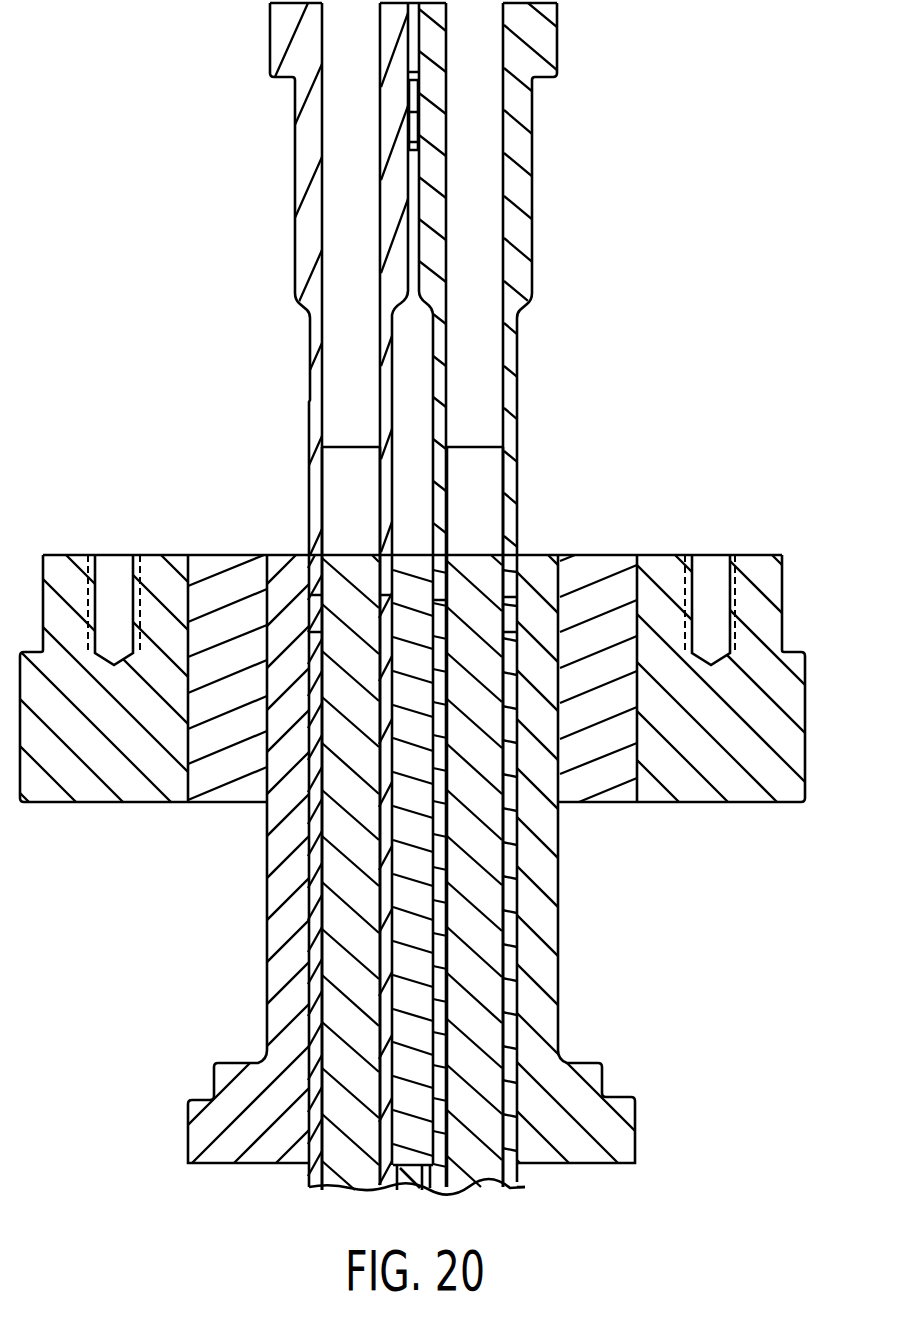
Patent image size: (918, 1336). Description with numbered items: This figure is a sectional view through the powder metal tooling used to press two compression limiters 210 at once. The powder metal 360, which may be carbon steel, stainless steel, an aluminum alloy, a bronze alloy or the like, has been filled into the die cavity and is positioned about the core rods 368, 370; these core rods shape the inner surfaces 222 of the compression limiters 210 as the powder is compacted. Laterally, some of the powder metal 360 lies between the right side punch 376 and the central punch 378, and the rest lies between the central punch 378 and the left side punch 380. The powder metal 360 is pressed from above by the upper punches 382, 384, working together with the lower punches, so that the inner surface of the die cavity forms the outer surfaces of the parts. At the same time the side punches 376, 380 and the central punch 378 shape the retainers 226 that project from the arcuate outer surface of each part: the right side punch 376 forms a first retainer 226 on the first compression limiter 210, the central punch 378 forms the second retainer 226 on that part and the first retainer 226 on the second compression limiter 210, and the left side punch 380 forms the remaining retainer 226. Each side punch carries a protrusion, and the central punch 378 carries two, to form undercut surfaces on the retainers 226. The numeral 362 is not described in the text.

The compression limiter 210 is at (394, 595).
The inner surface 222 is at (348, 595).
The retainer 226 is at (430, 615).
The powder metal 360 is at (518, 620).
The left inner tube 362 is at (316, 638).
The core rod 368 is at (503, 898).
The core rod 370 is at (320, 950).
The right side punch 376 is at (559, 823).
The central punch 378 is at (433, 1010).
The left side punch 380 is at (267, 856).
The upper punch 382 is at (517, 357).
The upper punch 384 is at (309, 333).